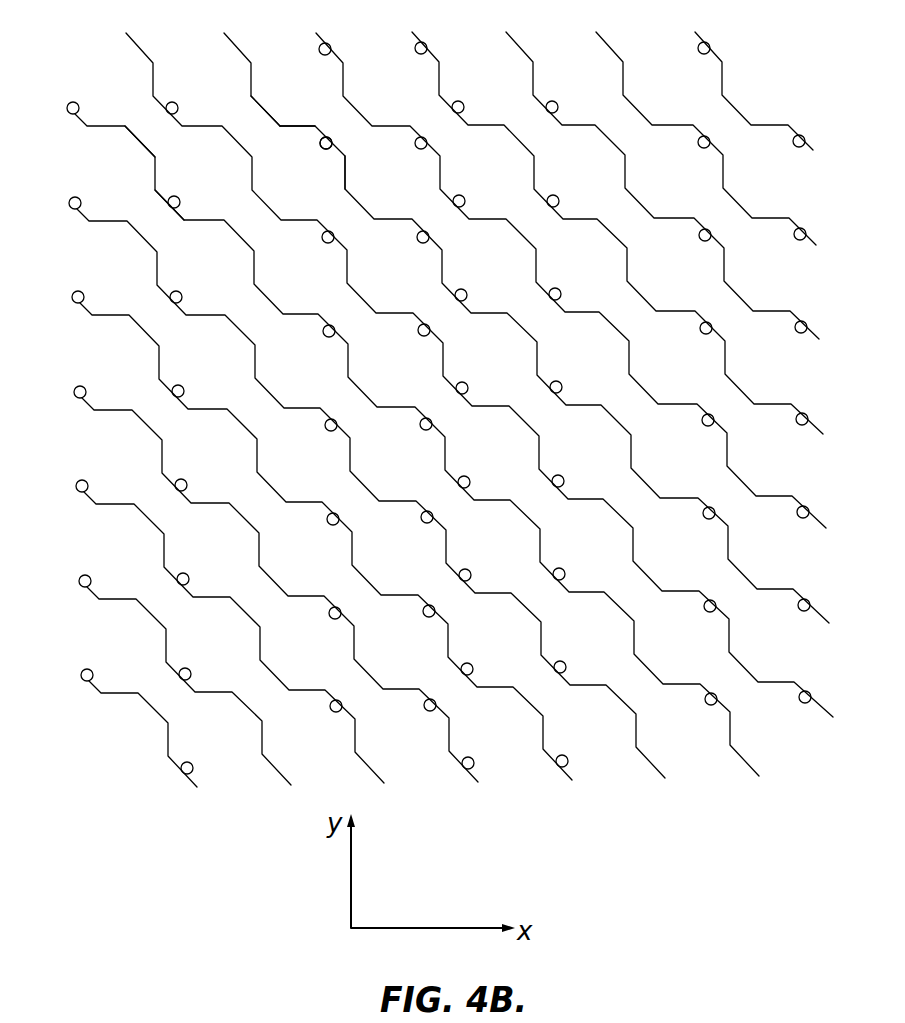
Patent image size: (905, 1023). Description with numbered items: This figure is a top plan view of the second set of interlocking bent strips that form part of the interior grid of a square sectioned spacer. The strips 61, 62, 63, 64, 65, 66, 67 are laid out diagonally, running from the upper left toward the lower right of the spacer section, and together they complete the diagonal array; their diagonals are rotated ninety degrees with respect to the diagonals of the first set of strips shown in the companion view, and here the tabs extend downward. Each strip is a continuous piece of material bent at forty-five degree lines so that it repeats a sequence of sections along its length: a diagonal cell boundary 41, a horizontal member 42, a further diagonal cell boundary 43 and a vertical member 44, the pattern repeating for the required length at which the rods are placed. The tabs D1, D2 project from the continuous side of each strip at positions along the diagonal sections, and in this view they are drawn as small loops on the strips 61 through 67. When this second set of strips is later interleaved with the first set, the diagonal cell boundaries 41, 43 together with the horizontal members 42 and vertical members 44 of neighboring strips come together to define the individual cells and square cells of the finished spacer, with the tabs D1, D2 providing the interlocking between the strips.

The diagonal cell boundary 41 is at (264, 110).
The horizontal member 42 is at (294, 125).
The diagonal cell boundary 43 is at (320, 150).
The vertical member 44 is at (347, 172).
The strip 61 is at (697, 12).
The strip 62 is at (600, 12).
The strip 63 is at (503, 12).
The strip 64 is at (413, 12).
The strip 65 is at (318, 12).
The strip 66 is at (221, 12).
The strip 67 is at (128, 12).
The tab D1 is at (143, 133).
The tab D2 is at (172, 211).